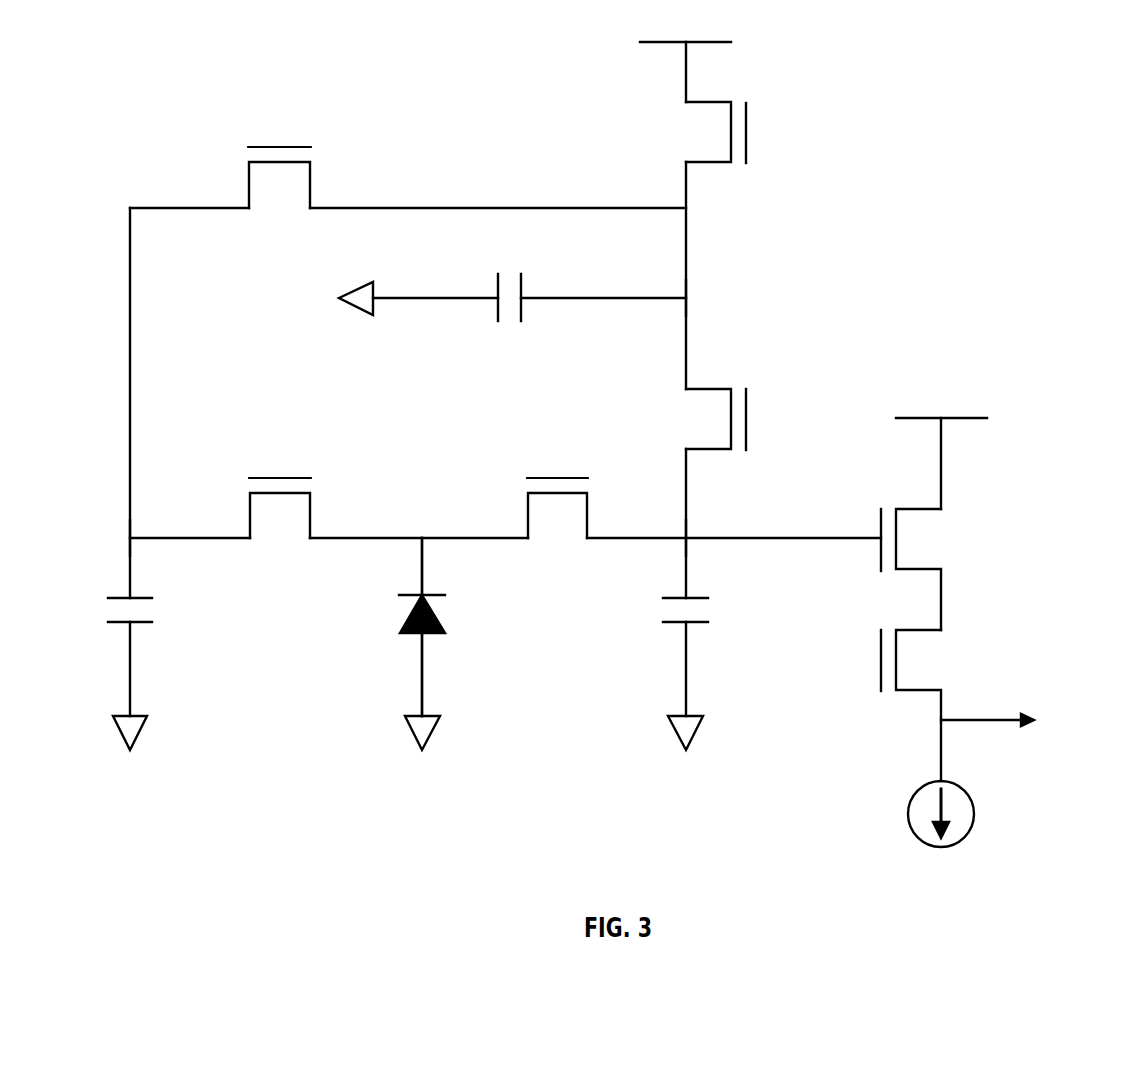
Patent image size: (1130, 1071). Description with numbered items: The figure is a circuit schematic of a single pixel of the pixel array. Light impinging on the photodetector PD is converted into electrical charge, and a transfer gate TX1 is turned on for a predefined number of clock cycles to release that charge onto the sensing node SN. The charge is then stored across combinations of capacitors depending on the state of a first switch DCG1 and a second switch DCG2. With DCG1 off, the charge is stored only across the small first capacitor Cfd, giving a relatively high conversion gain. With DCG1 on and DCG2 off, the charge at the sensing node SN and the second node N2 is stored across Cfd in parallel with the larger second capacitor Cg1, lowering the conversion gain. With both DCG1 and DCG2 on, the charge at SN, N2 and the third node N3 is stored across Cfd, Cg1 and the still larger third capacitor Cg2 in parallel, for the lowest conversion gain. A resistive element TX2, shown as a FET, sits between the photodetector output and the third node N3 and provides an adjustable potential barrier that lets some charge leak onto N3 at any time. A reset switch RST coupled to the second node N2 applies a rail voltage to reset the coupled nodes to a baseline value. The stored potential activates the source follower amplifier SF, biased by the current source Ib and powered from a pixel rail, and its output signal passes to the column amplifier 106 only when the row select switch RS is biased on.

The reset switch RST is at (738, 132).
The second switch DCG2 is at (279, 165).
The second node N2 is at (686, 298).
The second capacitor Cg1 is at (512, 295).
The first switch DCG1 is at (744, 419).
The third node N3 is at (130, 538).
The sensing node SN is at (686, 538).
The resistive element TX2 is at (280, 495).
The transfer gate TX1 is at (557, 495).
The photodetector PD is at (433, 627).
The third capacitor Cg2 is at (138, 626).
The first capacitor Cfd is at (692, 625).
The source follower amplifier SF is at (912, 569).
The row select switch RS is at (894, 705).
The column amplifier 106 is at (1020, 697).
The current source Ib is at (951, 814).